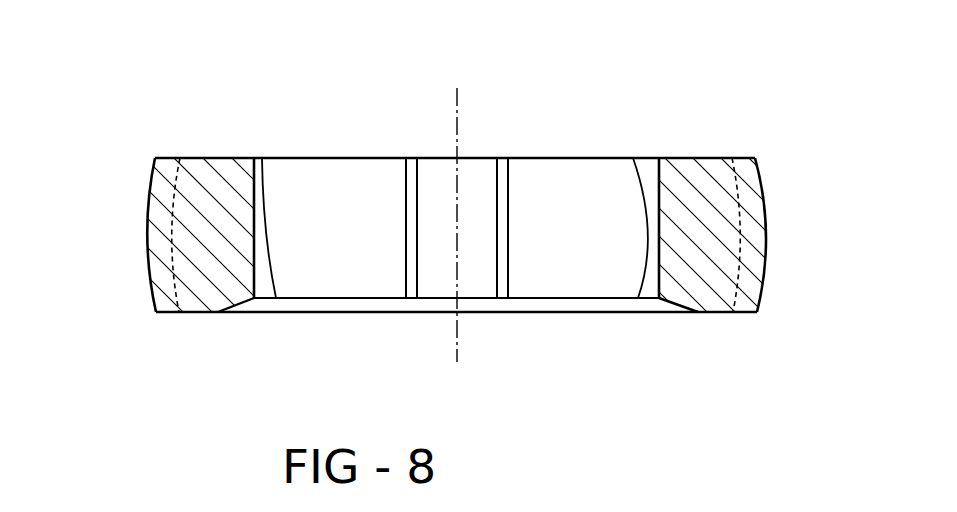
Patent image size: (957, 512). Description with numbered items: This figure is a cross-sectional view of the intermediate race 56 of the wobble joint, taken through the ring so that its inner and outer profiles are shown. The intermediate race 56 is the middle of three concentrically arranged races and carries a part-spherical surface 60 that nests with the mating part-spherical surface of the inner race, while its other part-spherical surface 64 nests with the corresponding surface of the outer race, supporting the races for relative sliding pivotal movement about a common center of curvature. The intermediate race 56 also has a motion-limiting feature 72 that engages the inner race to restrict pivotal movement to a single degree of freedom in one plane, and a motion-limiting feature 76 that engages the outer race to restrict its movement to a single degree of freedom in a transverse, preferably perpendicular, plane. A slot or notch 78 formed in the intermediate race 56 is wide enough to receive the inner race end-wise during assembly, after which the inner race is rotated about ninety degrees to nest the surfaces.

The intermediate race 56 is at (774, 138).
The part-spherical surface 60 is at (266, 218).
The part-spherical surface 64 is at (168, 257).
The motion-limiting feature 72 is at (472, 198).
The motion-limiting feature 76 is at (161, 179).
The slot or notch 78 is at (263, 166).